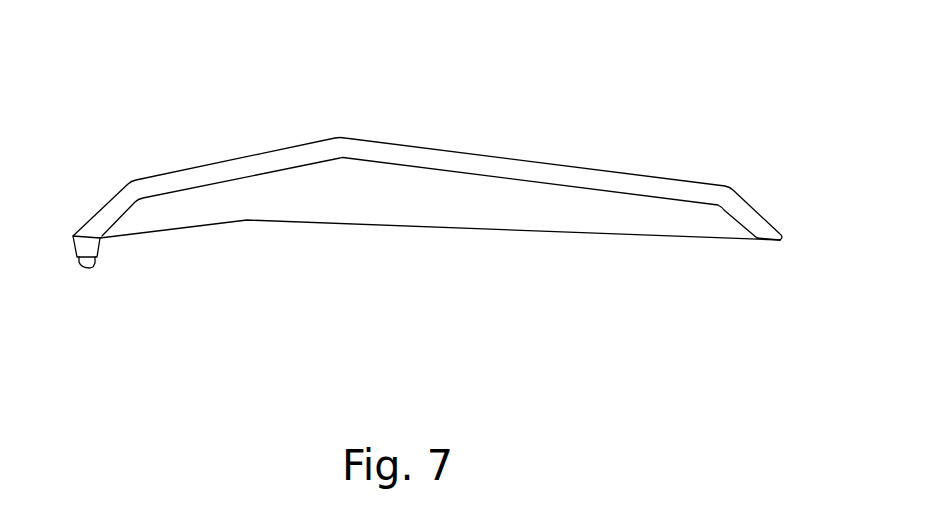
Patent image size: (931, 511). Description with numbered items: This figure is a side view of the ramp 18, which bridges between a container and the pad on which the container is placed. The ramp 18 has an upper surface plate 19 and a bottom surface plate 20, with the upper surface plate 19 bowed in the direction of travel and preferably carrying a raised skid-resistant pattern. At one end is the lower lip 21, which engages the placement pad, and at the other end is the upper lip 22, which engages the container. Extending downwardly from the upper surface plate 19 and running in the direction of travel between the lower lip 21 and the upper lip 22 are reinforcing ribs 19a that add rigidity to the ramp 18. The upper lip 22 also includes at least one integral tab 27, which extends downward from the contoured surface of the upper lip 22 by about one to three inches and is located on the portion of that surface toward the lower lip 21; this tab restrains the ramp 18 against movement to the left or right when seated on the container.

The ramp 18 is at (403, 195).
The upper surface plate 19 is at (295, 147).
The reinforcing ribs 19a is at (359, 207).
The bottom surface plate 20 is at (405, 228).
The lower lip 21 is at (777, 243).
The upper lip 22 is at (78, 262).
The integral tab 27 is at (92, 268).